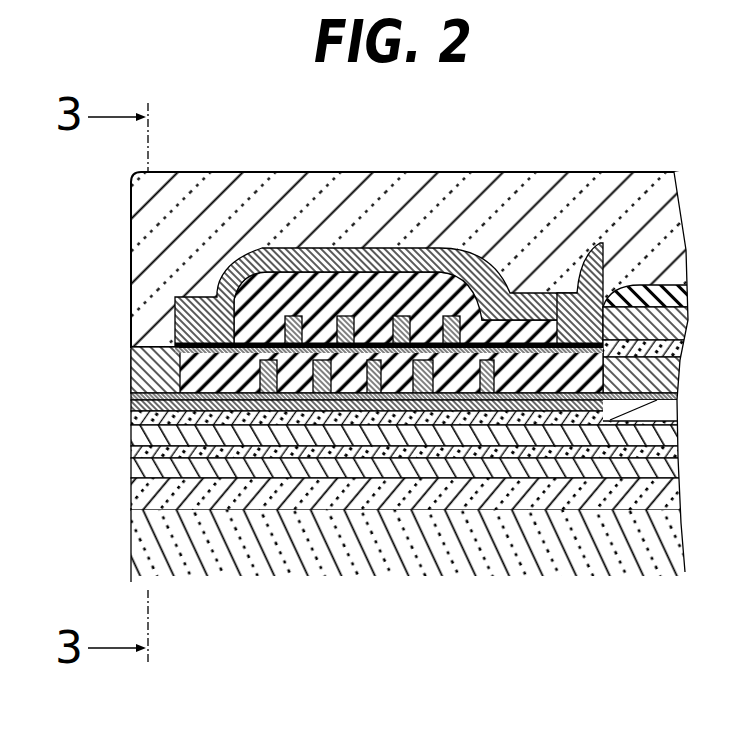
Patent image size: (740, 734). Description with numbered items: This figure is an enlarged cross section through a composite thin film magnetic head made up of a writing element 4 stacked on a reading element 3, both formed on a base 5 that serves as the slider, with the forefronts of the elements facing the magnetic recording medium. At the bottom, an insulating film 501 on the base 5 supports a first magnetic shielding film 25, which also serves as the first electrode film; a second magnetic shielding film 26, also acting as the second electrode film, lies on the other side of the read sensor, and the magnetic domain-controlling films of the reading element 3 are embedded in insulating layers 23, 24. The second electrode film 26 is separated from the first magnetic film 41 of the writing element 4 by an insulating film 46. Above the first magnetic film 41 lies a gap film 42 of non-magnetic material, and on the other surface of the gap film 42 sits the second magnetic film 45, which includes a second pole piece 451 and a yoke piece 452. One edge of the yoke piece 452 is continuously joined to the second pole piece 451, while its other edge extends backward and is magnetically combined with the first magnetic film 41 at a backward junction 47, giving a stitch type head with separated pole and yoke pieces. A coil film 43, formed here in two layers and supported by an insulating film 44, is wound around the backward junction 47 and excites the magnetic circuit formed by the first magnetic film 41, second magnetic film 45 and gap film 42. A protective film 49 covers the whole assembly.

The reading element 3 is at (140, 456).
The writing element 4 is at (335, 377).
The base 5 is at (657, 550).
The insulating layer 23 is at (190, 452).
The insulating layer 24 is at (415, 527).
The first magnetic shielding film 25 is at (543, 460).
The second magnetic shielding film 26 is at (272, 438).
The first magnetic film 41 is at (131, 398).
The gap film 42 is at (325, 362).
The coil film 43 is at (373, 362).
The insulating film 44 is at (401, 345).
The second magnetic film 45 is at (387, 228).
The insulating film 46 is at (603, 413).
The backward junction 47 is at (557, 295).
The protective film 49 is at (228, 215).
The second pole piece 451 is at (140, 373).
The yoke piece 452 is at (178, 318).
The insulating film 501 is at (477, 487).